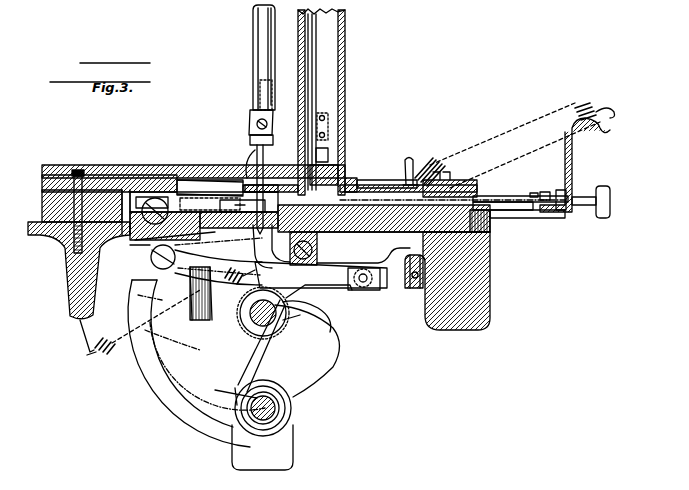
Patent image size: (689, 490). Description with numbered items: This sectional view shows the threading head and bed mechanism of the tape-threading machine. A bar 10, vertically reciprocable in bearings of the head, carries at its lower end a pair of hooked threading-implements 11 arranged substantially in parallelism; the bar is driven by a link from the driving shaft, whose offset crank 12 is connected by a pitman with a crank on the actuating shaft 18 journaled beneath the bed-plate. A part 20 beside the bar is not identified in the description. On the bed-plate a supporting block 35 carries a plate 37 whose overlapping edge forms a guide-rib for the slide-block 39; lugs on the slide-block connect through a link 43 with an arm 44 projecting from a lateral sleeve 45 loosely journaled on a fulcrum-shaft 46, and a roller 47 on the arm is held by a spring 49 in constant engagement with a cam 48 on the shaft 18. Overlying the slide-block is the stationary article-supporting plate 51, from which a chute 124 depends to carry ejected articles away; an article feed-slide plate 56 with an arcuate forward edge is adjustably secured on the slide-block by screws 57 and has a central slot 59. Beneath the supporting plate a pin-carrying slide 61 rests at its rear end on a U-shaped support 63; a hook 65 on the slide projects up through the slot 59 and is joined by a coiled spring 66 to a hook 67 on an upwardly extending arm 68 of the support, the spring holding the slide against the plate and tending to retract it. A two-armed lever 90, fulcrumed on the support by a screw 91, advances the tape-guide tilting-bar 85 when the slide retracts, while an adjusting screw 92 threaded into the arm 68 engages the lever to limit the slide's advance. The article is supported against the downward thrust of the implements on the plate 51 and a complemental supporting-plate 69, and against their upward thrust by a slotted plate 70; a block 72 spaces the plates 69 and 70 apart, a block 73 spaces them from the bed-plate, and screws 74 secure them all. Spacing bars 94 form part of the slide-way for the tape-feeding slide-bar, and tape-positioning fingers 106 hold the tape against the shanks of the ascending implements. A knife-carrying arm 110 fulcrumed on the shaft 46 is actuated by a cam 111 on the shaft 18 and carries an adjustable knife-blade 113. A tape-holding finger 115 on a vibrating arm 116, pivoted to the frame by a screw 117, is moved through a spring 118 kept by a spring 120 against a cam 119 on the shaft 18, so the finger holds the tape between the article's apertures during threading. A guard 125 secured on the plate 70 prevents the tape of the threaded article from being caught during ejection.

The bar 10 is at (255, 32).
The hooked threading-implements 11 is at (257, 155).
The offset crank 12 is at (245, 235).
The actuating shaft 18 is at (285, 302).
The tubular post 20 is at (345, 56).
The supporting block 35 is at (490, 236).
The plate 37 is at (490, 198).
The slide-block 39 is at (380, 232).
The link 43 is at (218, 256).
The arm 44 is at (132, 288).
The lateral sleeve 45 is at (291, 408).
The fulcrum-shaft 46 is at (232, 442).
The roller 47 is at (170, 394).
The cam 48 is at (346, 350).
The spring 49 is at (262, 348).
The article-supporting plate 51 is at (360, 184).
The article feed-slide plate 56 is at (475, 186).
The screw 57 is at (450, 180).
The central slot 59 is at (380, 188).
The article-registering-pin carrying slide 61 is at (520, 202).
The U-shaped support 63 is at (535, 218).
The hook 65 is at (407, 170).
The coiled spring 66 is at (434, 160).
The hook 67 is at (612, 126).
The arm 68 is at (574, 160).
The complemental supporting-plate 69 is at (220, 192).
The plate 70 is at (180, 180).
The block 72 is at (42, 184).
The block 73 is at (42, 208).
The screw 74 is at (78, 168).
The tape-guide tilting-bar 85 is at (536, 194).
The two-armed lever 90 is at (560, 195).
The screw 91 is at (536, 192).
The adjusting screw 92 is at (600, 212).
The spacing bar 94 is at (328, 157).
The tape-positioning fingers 106 is at (263, 230).
The knife-carrying arm 110 is at (148, 360).
The cam 111 is at (240, 286).
The knife-blade 113 is at (178, 245).
The tape-holding finger 115 is at (219, 281).
The vibrating arm 116 is at (348, 288).
The screw 117 is at (412, 296).
The spring 118 is at (321, 275).
The cam 119 is at (330, 322).
The spring 120 is at (112, 345).
The chute 124 is at (242, 205).
The guard 125 is at (278, 135).